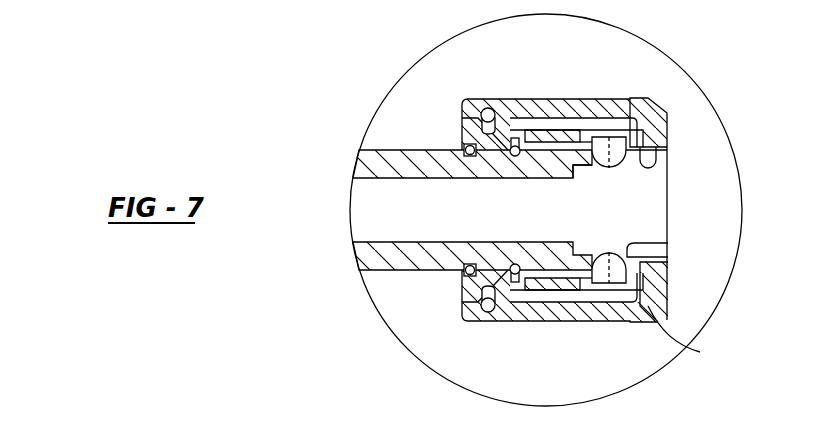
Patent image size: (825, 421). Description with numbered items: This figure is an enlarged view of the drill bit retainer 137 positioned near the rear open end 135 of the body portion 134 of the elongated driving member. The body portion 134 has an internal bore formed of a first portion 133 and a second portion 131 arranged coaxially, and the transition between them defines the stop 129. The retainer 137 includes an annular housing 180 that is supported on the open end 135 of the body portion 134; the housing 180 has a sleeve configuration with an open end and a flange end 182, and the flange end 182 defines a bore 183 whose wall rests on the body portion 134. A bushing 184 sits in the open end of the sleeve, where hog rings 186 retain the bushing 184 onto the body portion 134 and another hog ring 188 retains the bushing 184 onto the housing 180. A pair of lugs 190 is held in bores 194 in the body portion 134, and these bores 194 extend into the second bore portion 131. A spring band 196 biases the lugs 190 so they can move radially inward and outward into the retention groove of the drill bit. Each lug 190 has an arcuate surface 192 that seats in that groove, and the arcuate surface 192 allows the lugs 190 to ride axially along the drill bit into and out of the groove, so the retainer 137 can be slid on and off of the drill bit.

The drill bit retainer 137 is at (463, 93).
The first portion of the internal bore 133 is at (390, 178).
The body portion 134 is at (385, 255).
The hog ring 188 is at (490, 112).
The bushing 184 is at (503, 150).
The spring band 196 is at (550, 140).
The lugs 190 is at (615, 150).
The second portion of the internal bore 131 is at (667, 150).
The rear open end 135 is at (667, 153).
The bores 194 is at (626, 158).
The arcuate surface 192 is at (628, 162).
The stop 129 is at (575, 174).
The bore of the flange end 183 is at (665, 262).
The flange end 182 is at (660, 288).
The annular housing 180 is at (652, 312).
The hog rings 186 is at (468, 272).